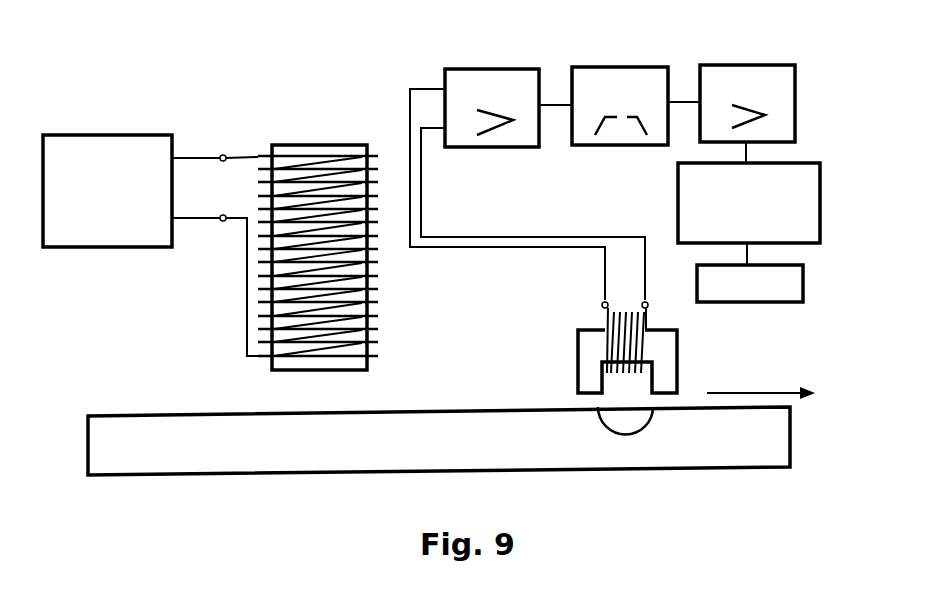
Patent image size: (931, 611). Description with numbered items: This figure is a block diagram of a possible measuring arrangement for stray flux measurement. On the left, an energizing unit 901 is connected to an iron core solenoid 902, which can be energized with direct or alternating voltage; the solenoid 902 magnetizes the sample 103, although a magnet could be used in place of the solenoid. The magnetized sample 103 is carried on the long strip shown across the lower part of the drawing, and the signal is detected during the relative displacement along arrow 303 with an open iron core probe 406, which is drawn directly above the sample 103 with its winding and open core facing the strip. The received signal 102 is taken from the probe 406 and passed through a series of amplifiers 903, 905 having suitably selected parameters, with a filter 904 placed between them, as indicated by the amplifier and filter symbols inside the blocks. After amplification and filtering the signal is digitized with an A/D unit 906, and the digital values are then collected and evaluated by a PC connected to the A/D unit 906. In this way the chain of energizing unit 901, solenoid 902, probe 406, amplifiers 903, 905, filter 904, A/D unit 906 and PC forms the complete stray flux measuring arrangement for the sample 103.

The energizing unit 901 is at (118, 143).
The iron core solenoid 902 is at (317, 153).
The amplifier 903 is at (510, 78).
The filter 904 is at (627, 81).
The amplifier 905 is at (765, 78).
The A/D unit 906 is at (808, 176).
The element PC is at (803, 277).
The open iron core probe 406 is at (668, 362).
The arrow 303 is at (772, 391).
The received signal 102 is at (790, 427).
The sample 103 is at (635, 422).